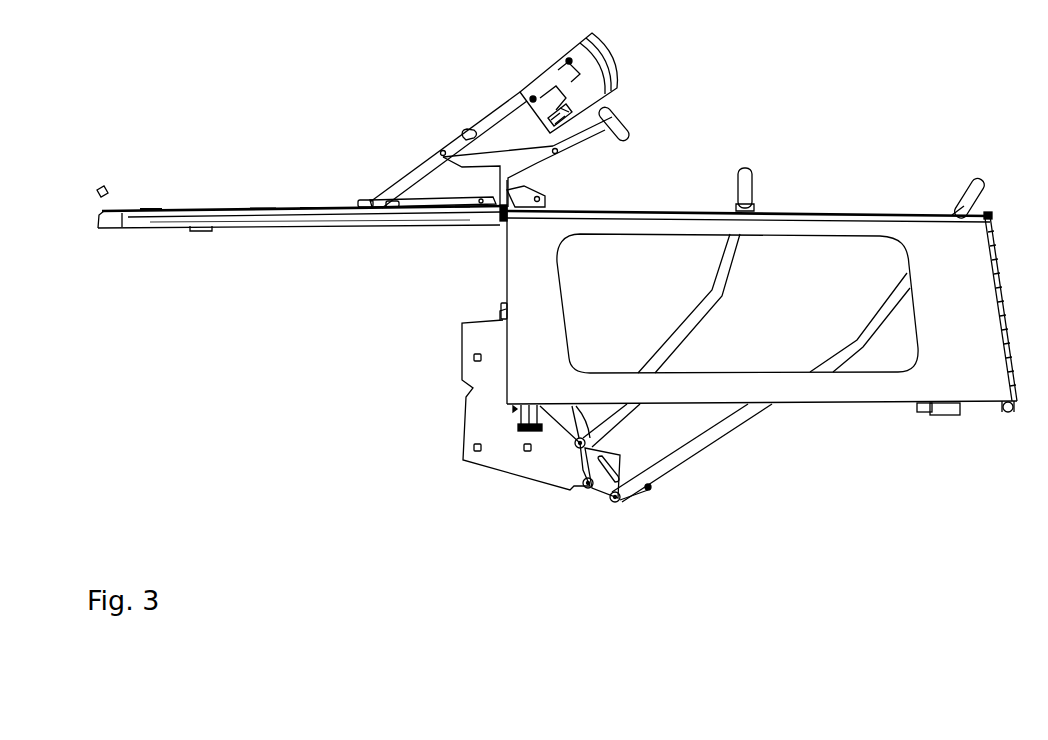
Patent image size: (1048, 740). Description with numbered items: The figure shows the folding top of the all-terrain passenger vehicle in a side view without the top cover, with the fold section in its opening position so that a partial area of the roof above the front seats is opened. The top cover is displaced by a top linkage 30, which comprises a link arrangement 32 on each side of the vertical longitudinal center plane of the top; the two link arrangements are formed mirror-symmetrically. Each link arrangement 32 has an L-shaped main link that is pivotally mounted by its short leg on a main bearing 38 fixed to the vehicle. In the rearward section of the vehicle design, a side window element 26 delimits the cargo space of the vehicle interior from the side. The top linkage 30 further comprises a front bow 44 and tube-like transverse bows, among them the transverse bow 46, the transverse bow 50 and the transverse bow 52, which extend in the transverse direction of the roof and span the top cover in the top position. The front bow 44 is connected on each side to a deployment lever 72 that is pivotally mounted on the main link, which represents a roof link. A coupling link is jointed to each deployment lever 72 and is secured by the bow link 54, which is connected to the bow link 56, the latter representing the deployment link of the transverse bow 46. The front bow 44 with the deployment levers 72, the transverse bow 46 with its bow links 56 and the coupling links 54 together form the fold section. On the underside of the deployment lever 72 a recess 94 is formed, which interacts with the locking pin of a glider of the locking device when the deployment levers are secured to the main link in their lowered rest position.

The side window element 26 is at (825, 260).
The top linkage 30 is at (226, 206).
The link arrangement 32 is at (299, 221).
The main bearing 38 is at (487, 377).
The front bow 44 is at (600, 45).
The transverse bow 46 is at (610, 128).
The transverse bow 50 is at (750, 168).
The transverse bow 52 is at (983, 178).
The bow link 54 is at (507, 148).
The bow link 56 is at (583, 140).
The deployment lever 72 is at (412, 175).
The recess 94 is at (468, 128).